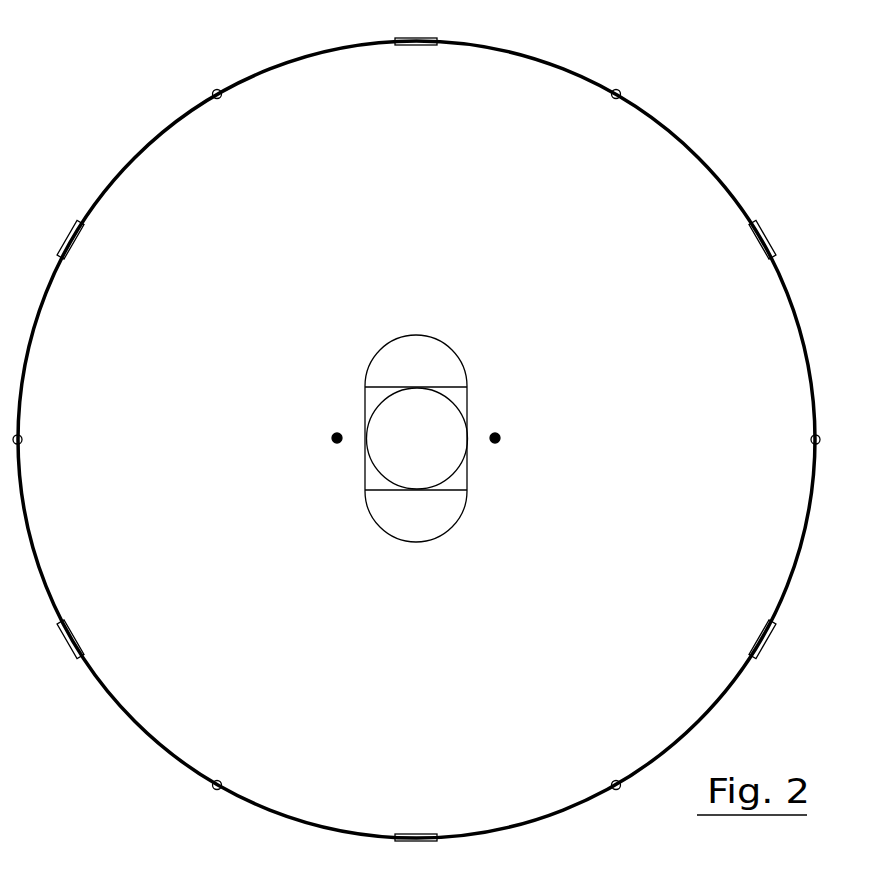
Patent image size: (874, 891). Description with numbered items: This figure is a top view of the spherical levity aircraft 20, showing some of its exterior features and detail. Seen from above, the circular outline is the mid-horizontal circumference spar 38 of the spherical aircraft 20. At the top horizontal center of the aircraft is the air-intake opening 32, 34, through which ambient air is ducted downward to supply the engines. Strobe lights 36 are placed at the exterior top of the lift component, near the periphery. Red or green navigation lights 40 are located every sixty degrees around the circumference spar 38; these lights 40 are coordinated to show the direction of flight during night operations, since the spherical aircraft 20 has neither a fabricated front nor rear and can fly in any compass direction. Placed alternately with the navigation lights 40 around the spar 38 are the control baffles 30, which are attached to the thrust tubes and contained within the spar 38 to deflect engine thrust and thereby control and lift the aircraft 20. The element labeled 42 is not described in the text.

The spherical aircraft 20 is at (690, 147).
The control baffles 30 is at (763, 237).
The air-intake opening 32 is at (428, 430).
The air-intake opening 34 is at (400, 450).
The strobe lights 36 is at (334, 436).
The horizontal circumference spar 38 is at (568, 810).
The navigation lights 40 is at (211, 91).
The slot end segments 42 is at (425, 360).